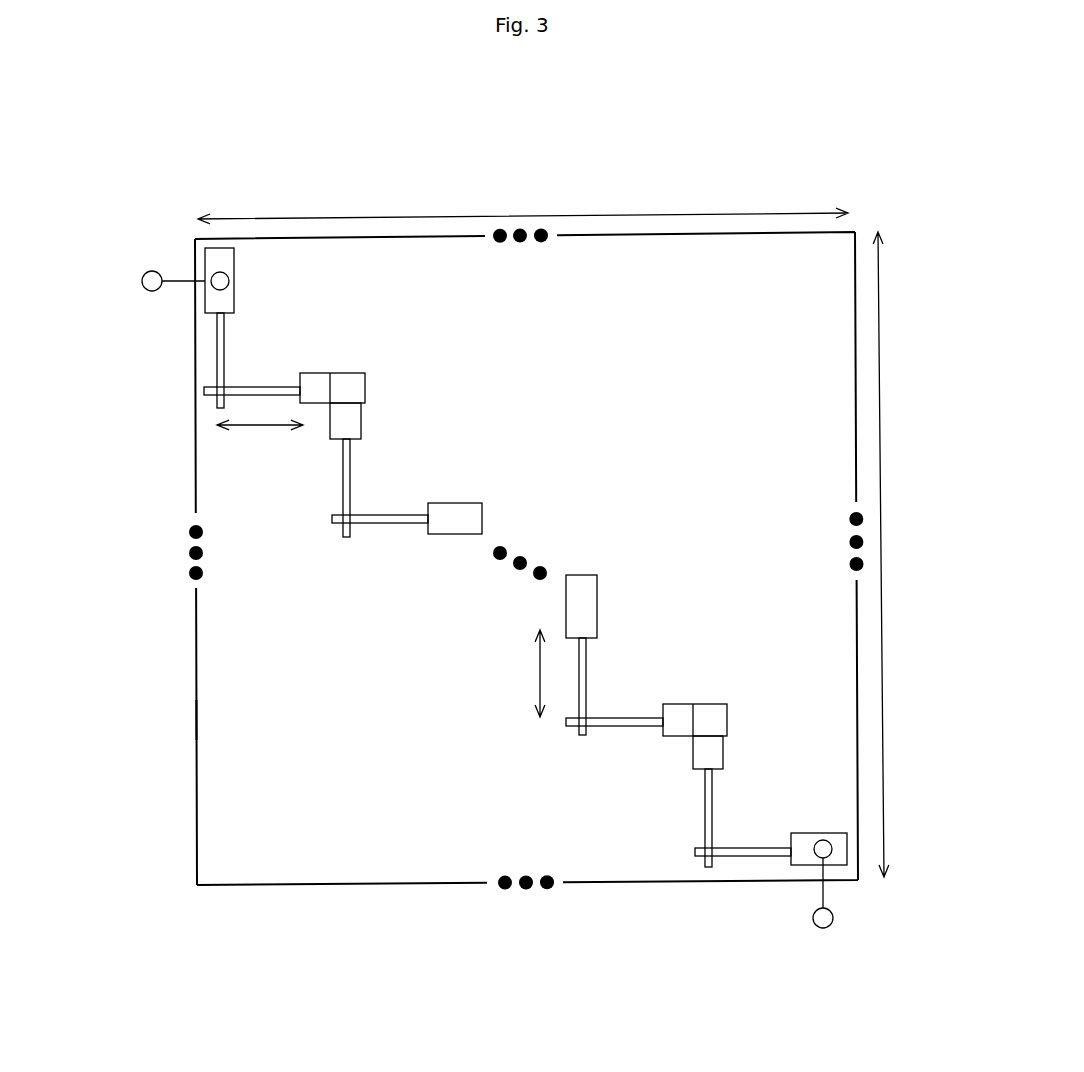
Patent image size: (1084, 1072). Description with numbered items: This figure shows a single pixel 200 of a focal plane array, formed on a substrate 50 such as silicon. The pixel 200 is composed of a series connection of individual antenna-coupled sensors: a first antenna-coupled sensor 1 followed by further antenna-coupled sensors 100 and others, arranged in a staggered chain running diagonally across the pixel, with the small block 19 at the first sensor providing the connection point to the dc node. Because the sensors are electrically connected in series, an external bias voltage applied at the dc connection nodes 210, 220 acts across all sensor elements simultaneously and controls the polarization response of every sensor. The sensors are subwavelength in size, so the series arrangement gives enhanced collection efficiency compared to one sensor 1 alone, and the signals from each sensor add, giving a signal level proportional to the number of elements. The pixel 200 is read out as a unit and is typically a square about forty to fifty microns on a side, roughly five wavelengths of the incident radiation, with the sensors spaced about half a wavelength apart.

The pixel 200 is at (293, 150).
The node 210 is at (152, 271).
The node 220 is at (833, 918).
The dc feed block 19 is at (228, 262).
The antenna-coupled sensor 1 is at (262, 367).
The antenna-coupled sensor 100 is at (395, 483).
The substrate 50 is at (197, 710).